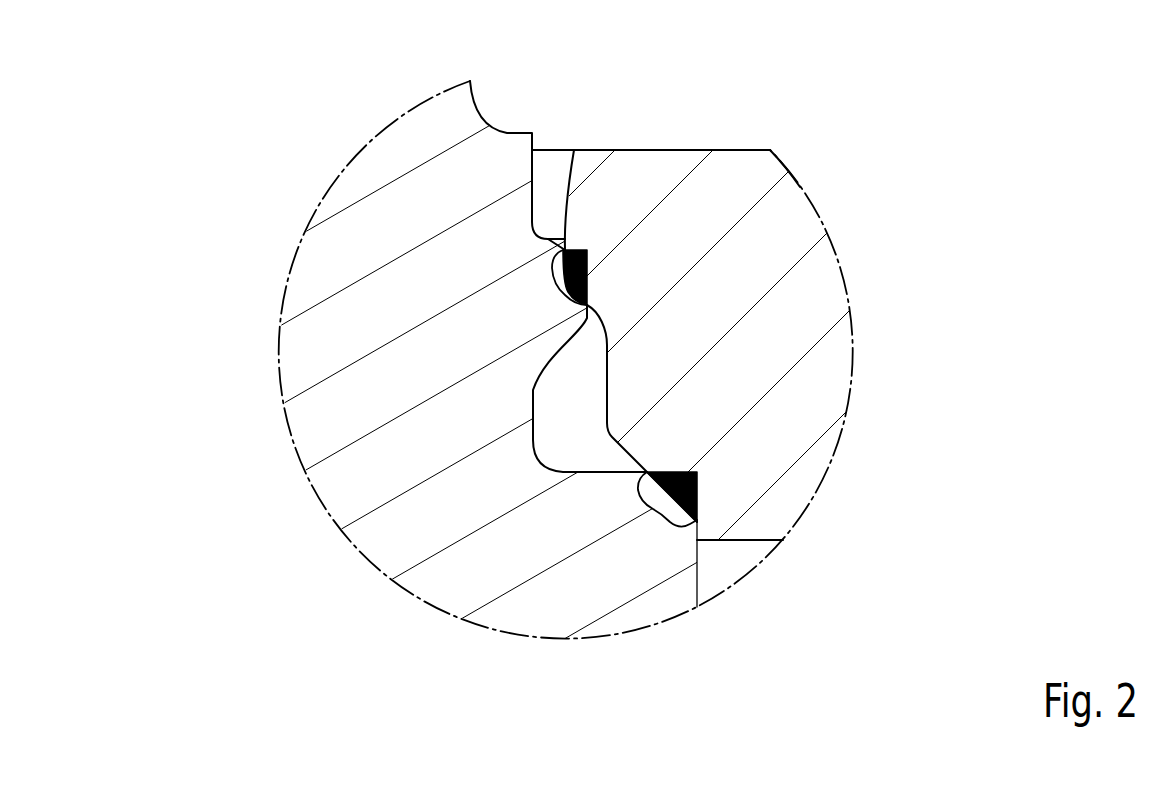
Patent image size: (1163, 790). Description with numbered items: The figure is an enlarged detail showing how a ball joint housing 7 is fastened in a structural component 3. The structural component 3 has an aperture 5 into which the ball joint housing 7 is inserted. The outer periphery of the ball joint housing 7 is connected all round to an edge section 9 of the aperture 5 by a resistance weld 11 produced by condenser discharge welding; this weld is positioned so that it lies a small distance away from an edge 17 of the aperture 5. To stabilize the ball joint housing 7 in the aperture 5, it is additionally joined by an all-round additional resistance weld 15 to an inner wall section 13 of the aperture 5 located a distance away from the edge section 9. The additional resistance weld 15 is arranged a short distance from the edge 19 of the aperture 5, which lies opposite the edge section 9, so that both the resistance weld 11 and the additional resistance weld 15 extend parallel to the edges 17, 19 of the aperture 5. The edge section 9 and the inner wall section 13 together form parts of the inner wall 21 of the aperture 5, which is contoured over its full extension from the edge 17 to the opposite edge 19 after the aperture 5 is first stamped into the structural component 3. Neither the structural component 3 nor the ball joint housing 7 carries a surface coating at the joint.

The structural component 3 is at (846, 281).
The aperture 5 is at (548, 150).
The ball joint housing 7 is at (311, 208).
The edge section 9 is at (653, 510).
The resistance weld 11 is at (700, 470).
The inner wall section 13 is at (552, 265).
The additional resistance weld 15 is at (588, 265).
The edge 17 is at (729, 547).
The edge 19 is at (577, 150).
The inner wall 21 is at (562, 174).